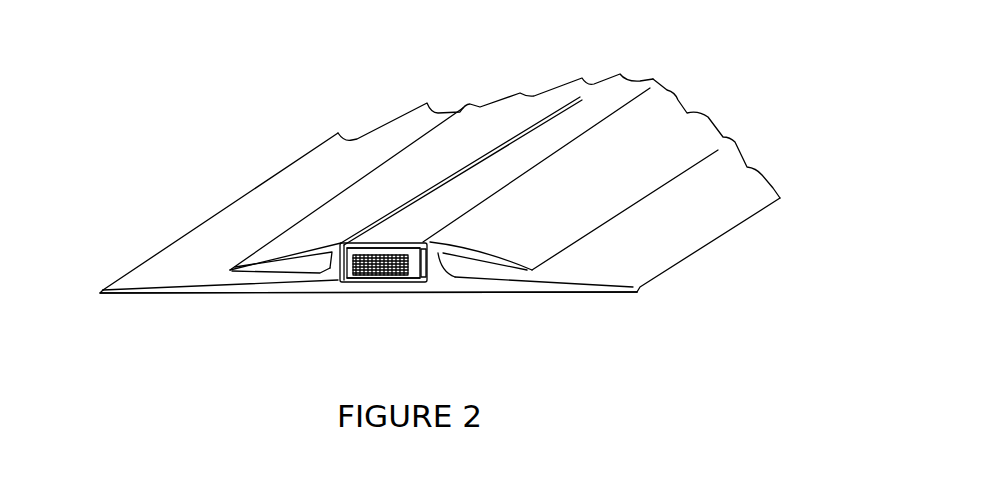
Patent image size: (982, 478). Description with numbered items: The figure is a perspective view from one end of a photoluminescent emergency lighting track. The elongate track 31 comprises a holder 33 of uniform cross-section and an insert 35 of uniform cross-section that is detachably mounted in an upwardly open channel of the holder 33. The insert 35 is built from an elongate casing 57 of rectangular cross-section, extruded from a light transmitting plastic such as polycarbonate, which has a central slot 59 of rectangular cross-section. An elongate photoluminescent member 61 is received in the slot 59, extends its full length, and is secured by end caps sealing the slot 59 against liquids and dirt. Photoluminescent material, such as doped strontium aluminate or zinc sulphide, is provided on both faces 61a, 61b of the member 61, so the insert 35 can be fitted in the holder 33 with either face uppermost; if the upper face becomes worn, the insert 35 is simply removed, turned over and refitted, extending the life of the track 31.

The elongate track 31 is at (720, 78).
The holder 33 is at (203, 289).
The insert 35 is at (513, 155).
The elongate casing 57 is at (345, 283).
The central slot 59 is at (387, 282).
The photoluminescent member 61 is at (413, 278).
The face of photoluminescent member 61a is at (376, 268).
The face of photoluminescent member 61b is at (372, 282).